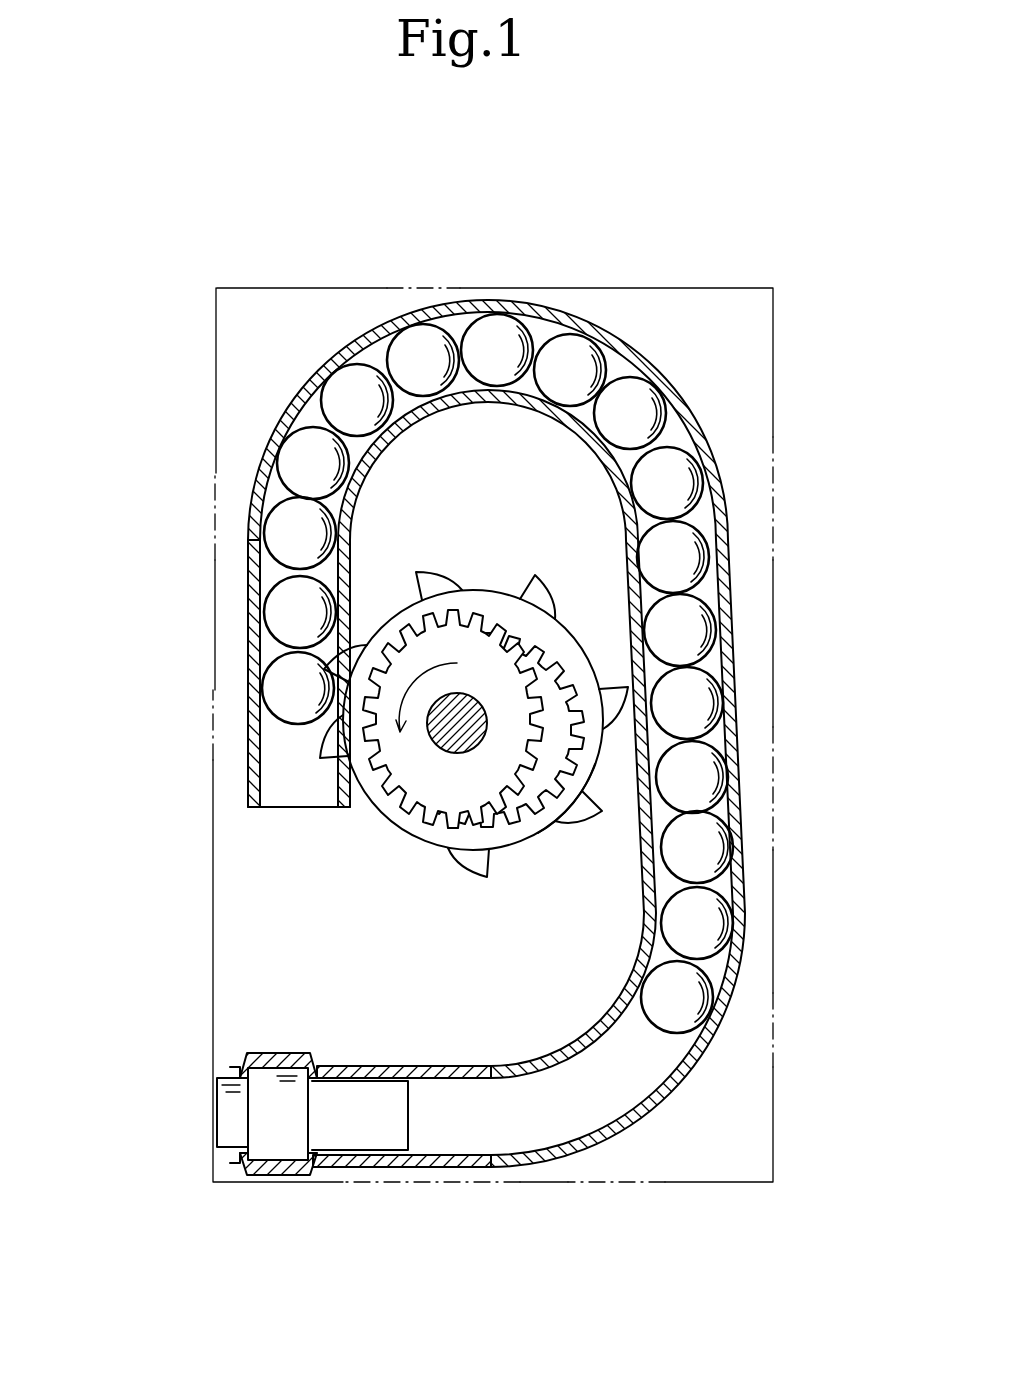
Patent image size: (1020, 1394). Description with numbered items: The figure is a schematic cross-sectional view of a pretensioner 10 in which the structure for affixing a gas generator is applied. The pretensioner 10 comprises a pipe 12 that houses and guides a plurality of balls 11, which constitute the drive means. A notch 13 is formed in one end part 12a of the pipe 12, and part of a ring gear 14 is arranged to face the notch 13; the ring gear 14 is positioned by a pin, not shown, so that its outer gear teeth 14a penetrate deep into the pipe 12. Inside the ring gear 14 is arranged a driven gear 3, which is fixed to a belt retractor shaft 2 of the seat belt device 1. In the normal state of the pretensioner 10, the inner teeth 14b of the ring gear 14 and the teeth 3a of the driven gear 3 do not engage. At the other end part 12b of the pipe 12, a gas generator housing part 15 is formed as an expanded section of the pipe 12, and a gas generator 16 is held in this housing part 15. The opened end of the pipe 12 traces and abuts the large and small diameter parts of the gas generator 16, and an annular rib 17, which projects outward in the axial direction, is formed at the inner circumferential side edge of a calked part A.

The seat belt device 1 is at (776, 767).
The pretensioner 10 is at (454, 752).
The balls 11 is at (677, 473).
The pipe 12 is at (722, 547).
The one end part of the pipe 12a is at (253, 638).
The other end part of the pipe 12b is at (352, 1158).
The notch 13 is at (357, 607).
The ring gear 14 is at (378, 713).
The outer gear teeth 14a is at (327, 733).
The inner teeth 14b is at (545, 795).
The belt retractor shaft 2 is at (445, 752).
The driven gear 3 is at (487, 726).
The teeth of the driven gear 3a is at (535, 708).
The gas generator housing part 15 is at (284, 1052).
The gas generator 16 is at (280, 1120).
The annular rib 17 is at (230, 1158).
The calked part A is at (235, 1058).